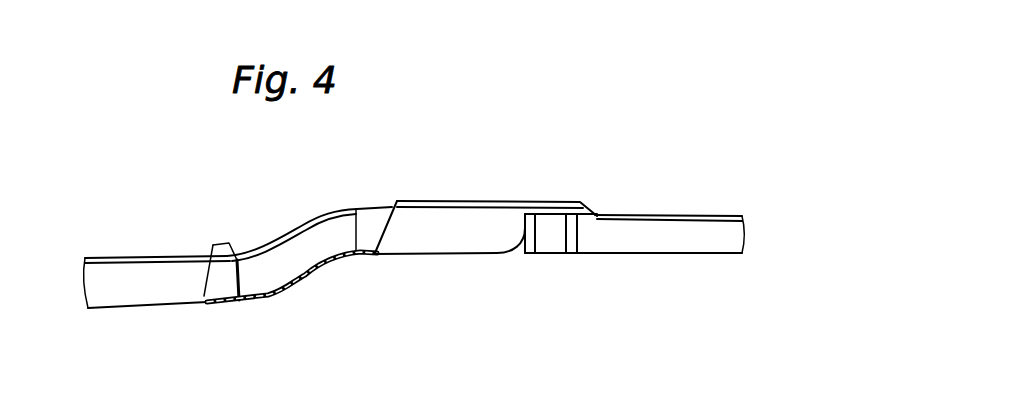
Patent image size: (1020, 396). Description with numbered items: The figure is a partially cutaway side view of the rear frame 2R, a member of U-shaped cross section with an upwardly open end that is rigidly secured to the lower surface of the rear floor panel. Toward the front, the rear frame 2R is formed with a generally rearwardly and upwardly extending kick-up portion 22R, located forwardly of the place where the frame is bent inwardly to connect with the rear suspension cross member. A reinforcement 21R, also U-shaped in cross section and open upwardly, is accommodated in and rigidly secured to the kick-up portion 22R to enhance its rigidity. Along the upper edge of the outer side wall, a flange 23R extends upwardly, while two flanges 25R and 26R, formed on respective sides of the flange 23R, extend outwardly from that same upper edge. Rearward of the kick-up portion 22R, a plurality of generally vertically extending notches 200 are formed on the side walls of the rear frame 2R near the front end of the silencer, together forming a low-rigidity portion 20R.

The rear frame 2R is at (697, 207).
The low-rigidity portion 20R is at (582, 260).
The reinforcement 21R is at (360, 223).
The kick-up portion 22R is at (357, 264).
The flange 23R is at (483, 207).
The flange 25R is at (148, 263).
The flange 26R is at (640, 212).
The notches 200 is at (497, 254).